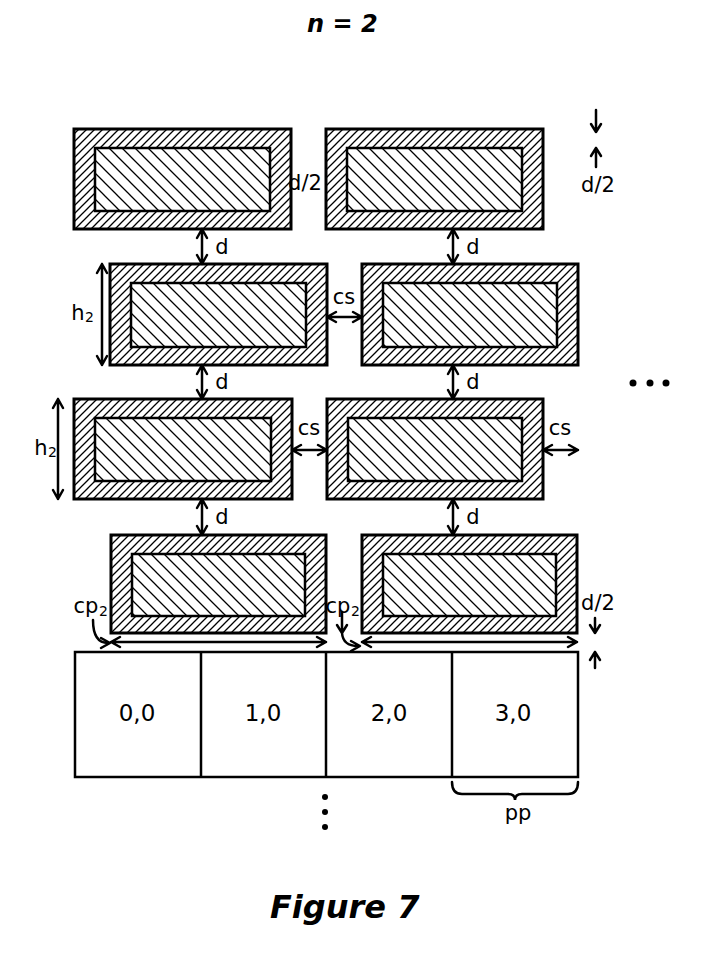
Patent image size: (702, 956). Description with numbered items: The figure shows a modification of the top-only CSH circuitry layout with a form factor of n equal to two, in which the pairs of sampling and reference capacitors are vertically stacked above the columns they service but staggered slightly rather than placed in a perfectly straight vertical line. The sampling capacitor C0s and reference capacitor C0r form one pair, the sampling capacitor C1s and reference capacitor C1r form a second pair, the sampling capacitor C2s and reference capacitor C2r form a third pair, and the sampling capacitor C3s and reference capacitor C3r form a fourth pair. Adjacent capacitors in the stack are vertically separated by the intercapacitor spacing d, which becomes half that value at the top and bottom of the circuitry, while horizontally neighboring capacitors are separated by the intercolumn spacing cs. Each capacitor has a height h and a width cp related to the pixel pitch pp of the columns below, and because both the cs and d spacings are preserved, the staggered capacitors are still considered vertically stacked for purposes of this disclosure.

The reference capacitor C3r is at (182, 179).
The reference capacitor C1r is at (434, 179).
The sampling capacitor C1s is at (218, 314).
The sampling capacitor C3s is at (470, 314).
The reference capacitor C2r is at (183, 449).
The reference capacitor C0r is at (435, 449).
The sampling capacitor C0s is at (218, 584).
The sampling capacitor C2s is at (469, 584).